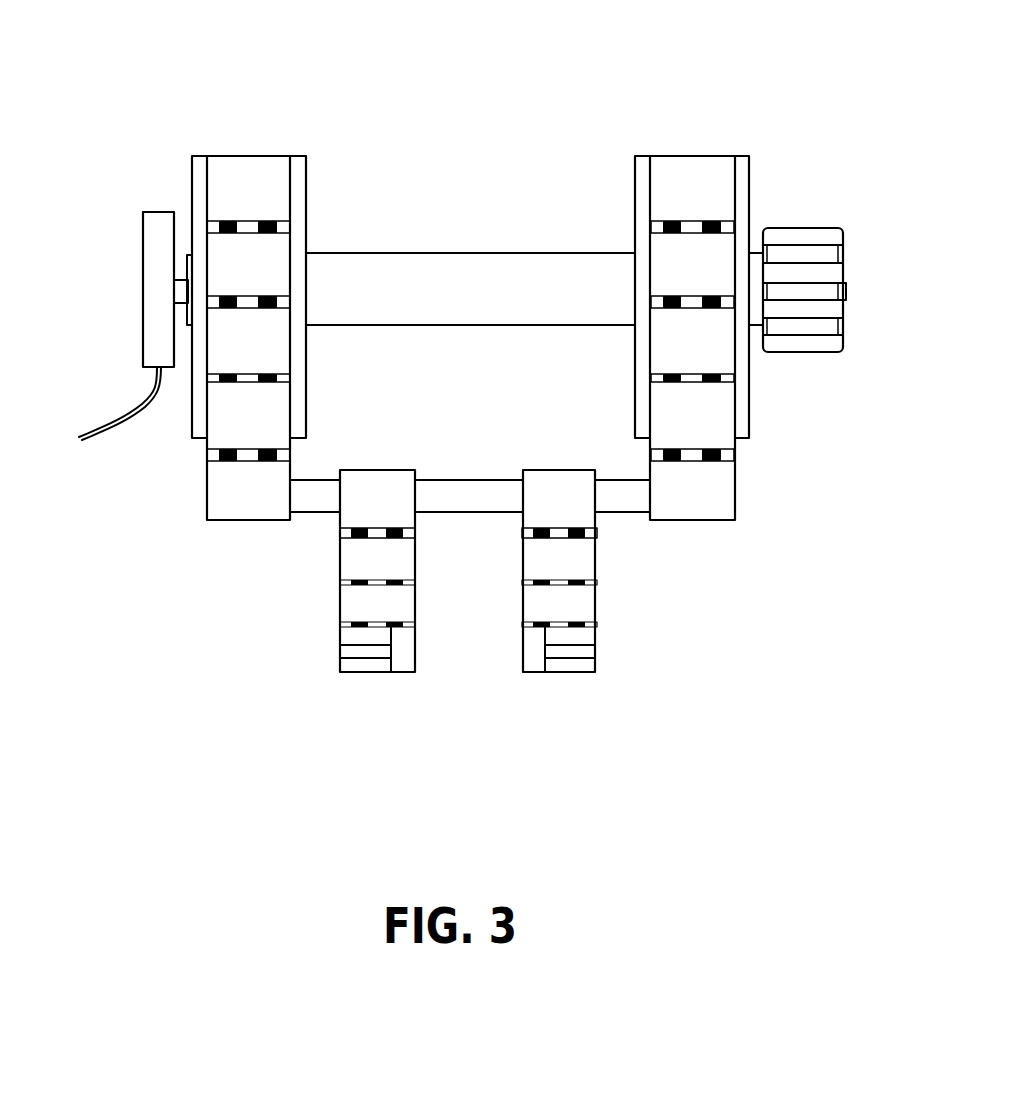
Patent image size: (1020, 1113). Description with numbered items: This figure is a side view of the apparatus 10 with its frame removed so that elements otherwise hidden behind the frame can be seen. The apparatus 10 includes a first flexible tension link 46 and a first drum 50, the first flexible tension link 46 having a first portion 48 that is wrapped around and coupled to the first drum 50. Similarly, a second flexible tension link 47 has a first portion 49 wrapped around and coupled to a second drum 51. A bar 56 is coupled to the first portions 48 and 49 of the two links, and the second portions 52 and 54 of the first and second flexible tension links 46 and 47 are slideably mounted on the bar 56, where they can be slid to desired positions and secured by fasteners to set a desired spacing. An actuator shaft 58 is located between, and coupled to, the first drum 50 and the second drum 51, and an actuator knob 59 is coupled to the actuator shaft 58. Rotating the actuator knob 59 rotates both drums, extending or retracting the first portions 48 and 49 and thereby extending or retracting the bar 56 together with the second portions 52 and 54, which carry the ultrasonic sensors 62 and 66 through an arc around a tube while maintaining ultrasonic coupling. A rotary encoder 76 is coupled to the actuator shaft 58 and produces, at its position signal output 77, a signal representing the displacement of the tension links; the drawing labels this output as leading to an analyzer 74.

The apparatus 10 is at (630, 73).
The first flexible tension link 46 is at (696, 536).
The second flexible tension link 47 is at (248, 531).
The first portion of the first flexible tension link 48 is at (672, 417).
The first portion of the second flexible tension link 49 is at (267, 415).
The first drum 50 is at (743, 180).
The second drum 51 is at (197, 178).
The second portion of the first flexible tension link 52 is at (583, 556).
The second portion of the second flexible tension link 54 is at (353, 556).
The bar 56 is at (468, 490).
The actuator shaft 58 is at (471, 264).
The actuator knob 59 is at (822, 253).
The ultrasonic sensor 62 is at (563, 667).
The ultrasonic sensor 66 is at (372, 667).
The analyzer 74 is at (54, 478).
The rotary encoder 76 is at (150, 245).
The position signal output 77 is at (133, 402).